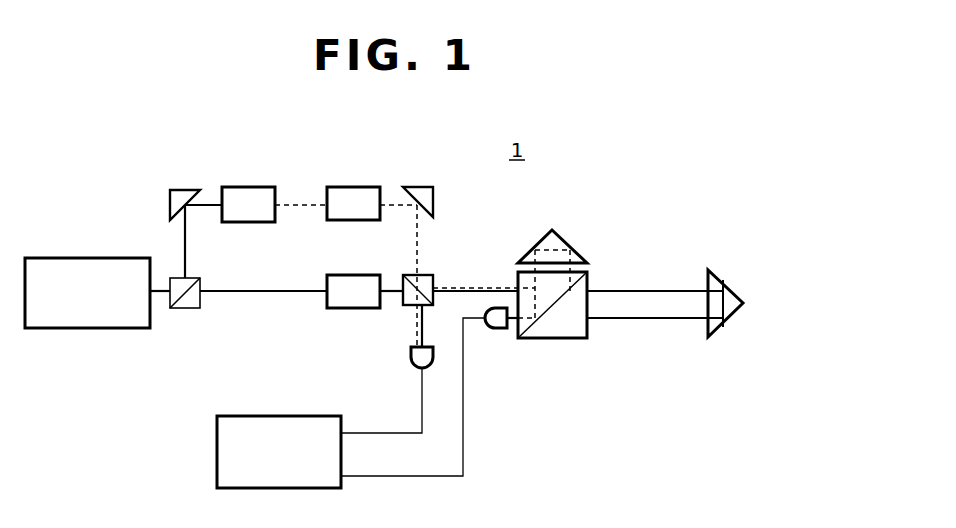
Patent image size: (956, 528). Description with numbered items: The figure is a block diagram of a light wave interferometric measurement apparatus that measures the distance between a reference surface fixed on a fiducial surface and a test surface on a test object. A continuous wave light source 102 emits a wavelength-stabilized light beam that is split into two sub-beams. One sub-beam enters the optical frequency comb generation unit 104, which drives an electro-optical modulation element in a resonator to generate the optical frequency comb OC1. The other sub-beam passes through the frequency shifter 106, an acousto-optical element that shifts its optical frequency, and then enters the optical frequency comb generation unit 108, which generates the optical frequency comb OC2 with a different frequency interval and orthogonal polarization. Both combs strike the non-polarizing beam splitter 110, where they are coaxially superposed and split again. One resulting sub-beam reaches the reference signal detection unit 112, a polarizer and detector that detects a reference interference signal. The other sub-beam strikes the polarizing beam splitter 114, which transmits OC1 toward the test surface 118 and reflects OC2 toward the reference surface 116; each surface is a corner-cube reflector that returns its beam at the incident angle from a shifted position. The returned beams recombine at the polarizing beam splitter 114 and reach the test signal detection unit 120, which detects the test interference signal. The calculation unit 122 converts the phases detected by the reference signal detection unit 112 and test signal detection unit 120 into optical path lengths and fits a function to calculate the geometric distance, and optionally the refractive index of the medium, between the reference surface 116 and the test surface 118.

The light source 102 is at (98, 258).
The optical frequency comb generation unit (first unit) 104 is at (360, 275).
The frequency shifter 106 is at (260, 187).
The optical frequency comb generation unit (second unit) 108 is at (360, 187).
The non-polarizing beam splitter 110 is at (435, 278).
The reference signal detection unit 112 is at (409, 362).
The polarizing beam splitter 114 is at (571, 341).
The reference surface 116 is at (567, 247).
The test surface 118 is at (726, 280).
The test signal detection unit 120 is at (497, 331).
The calculation unit 122 is at (247, 416).